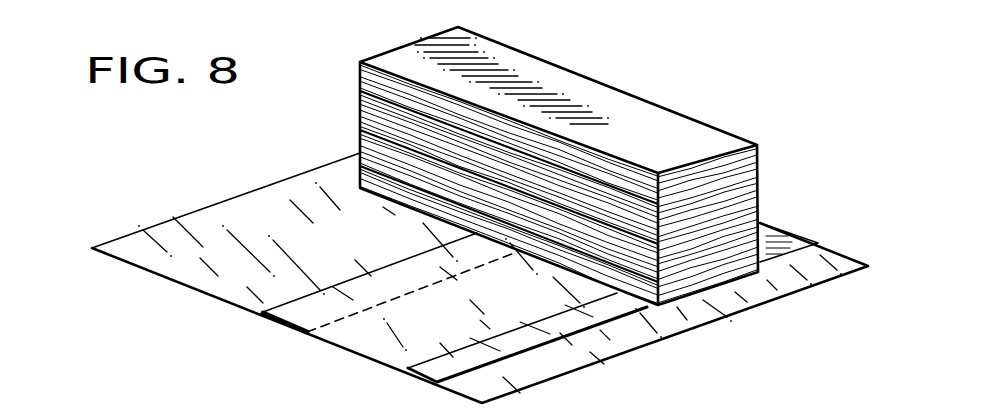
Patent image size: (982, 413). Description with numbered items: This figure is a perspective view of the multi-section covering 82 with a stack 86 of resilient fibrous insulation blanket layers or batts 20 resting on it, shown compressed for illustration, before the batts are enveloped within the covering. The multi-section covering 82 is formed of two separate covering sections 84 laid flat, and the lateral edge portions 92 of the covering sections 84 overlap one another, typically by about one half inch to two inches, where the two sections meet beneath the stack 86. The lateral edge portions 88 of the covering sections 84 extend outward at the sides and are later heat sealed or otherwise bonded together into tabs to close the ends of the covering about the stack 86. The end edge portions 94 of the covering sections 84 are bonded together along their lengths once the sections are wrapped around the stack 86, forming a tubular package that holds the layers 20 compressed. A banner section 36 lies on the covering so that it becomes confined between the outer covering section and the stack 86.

The resilient fibrous insulation blanket layers or batts 20 is at (601, 166).
The stack of compressed resilient fibrous insulation layers 86 is at (675, 94).
The multi-section covering 82 is at (212, 160).
The covering sections 84 is at (258, 212).
The lateral edge portions 88 is at (203, 223).
The overlapping lateral edge portions 92 is at (363, 292).
The end edge portions 94 is at (760, 227).
The banner section 36 is at (457, 353).